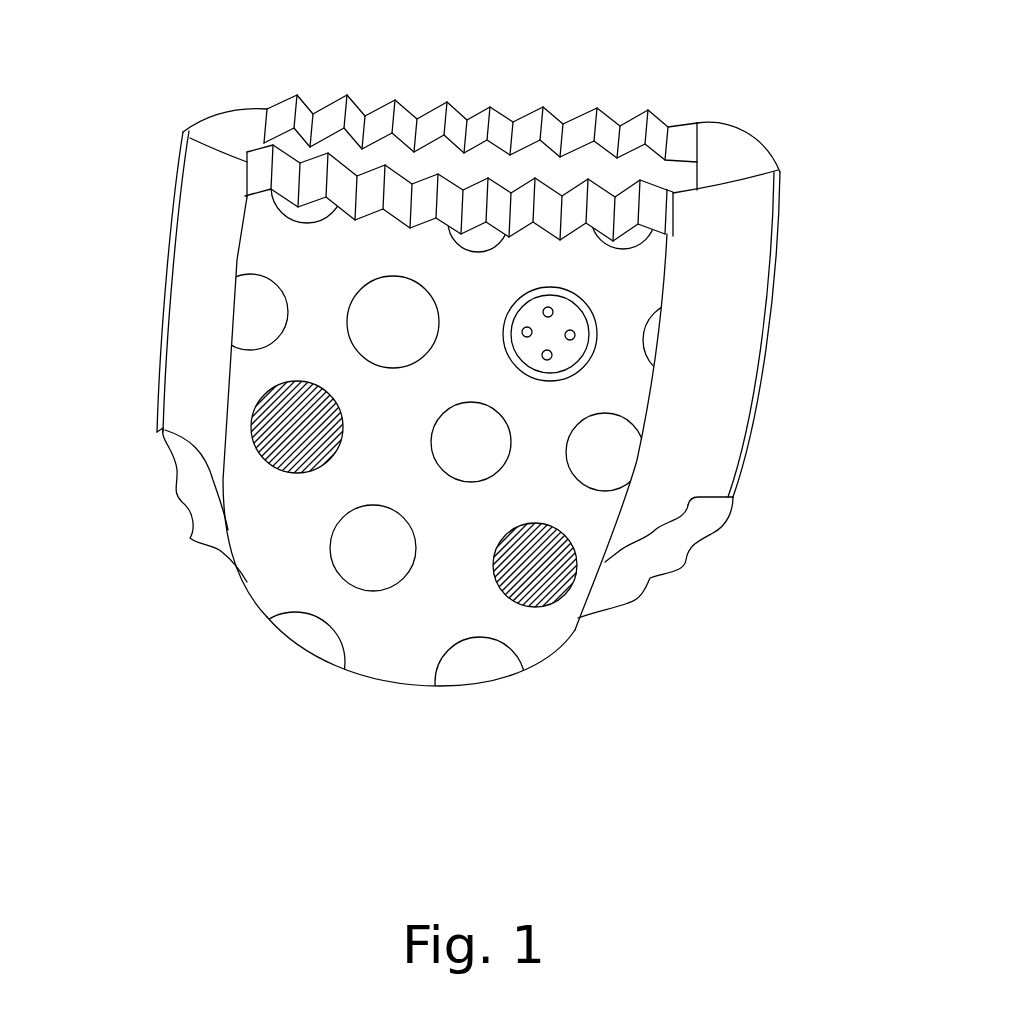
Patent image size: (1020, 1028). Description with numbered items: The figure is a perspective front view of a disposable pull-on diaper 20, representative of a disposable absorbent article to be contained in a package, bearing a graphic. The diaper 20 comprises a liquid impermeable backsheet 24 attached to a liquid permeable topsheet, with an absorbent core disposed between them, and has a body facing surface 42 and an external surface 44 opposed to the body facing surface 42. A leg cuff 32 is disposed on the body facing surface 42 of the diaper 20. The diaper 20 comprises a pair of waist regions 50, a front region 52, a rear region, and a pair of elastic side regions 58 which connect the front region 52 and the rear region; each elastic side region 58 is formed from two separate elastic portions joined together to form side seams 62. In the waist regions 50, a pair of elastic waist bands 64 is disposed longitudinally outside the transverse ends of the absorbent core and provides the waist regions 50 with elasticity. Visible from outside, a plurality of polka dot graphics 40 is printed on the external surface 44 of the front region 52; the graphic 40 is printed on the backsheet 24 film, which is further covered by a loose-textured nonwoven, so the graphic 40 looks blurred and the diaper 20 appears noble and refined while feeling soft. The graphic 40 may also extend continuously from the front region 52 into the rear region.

The diaper 20 is at (696, 718).
The backsheet 24 is at (523, 633).
The leg cuff 32 is at (293, 140).
The graphic 40 is at (295, 222).
The body facing surface 42 is at (537, 154).
The external surface 44 is at (404, 645).
The waist region 50 is at (258, 173).
The front region 52 is at (307, 500).
The elastic side region 58 is at (200, 232).
The side seam 62 is at (164, 350).
The elastic waist band 64 is at (580, 133).